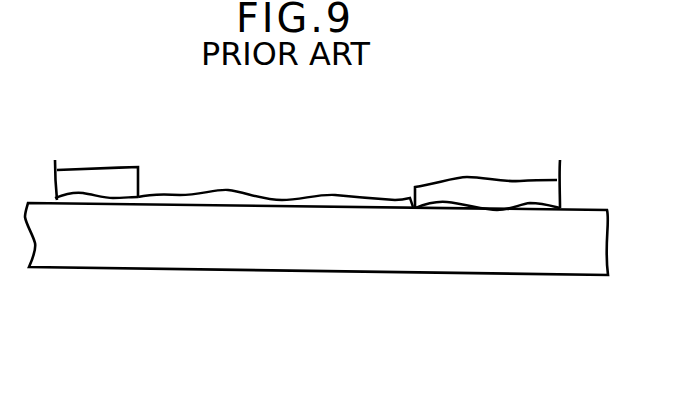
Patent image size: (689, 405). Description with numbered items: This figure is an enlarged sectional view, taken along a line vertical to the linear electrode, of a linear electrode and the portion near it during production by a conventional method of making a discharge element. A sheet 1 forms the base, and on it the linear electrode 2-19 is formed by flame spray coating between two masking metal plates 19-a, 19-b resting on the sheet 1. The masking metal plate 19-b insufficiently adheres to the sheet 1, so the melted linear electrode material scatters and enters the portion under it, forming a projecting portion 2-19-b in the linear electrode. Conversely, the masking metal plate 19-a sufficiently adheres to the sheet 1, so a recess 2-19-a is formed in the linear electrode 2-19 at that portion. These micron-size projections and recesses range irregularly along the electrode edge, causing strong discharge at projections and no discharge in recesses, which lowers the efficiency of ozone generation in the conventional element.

The sheet 1 is at (582, 232).
The linear electrode 2-19 is at (232, 198).
The recess 2-19-a is at (408, 207).
The projecting portion 2-19-b is at (128, 202).
The masking metal plate 19-a is at (473, 188).
The masking metal plate 19-b is at (100, 177).